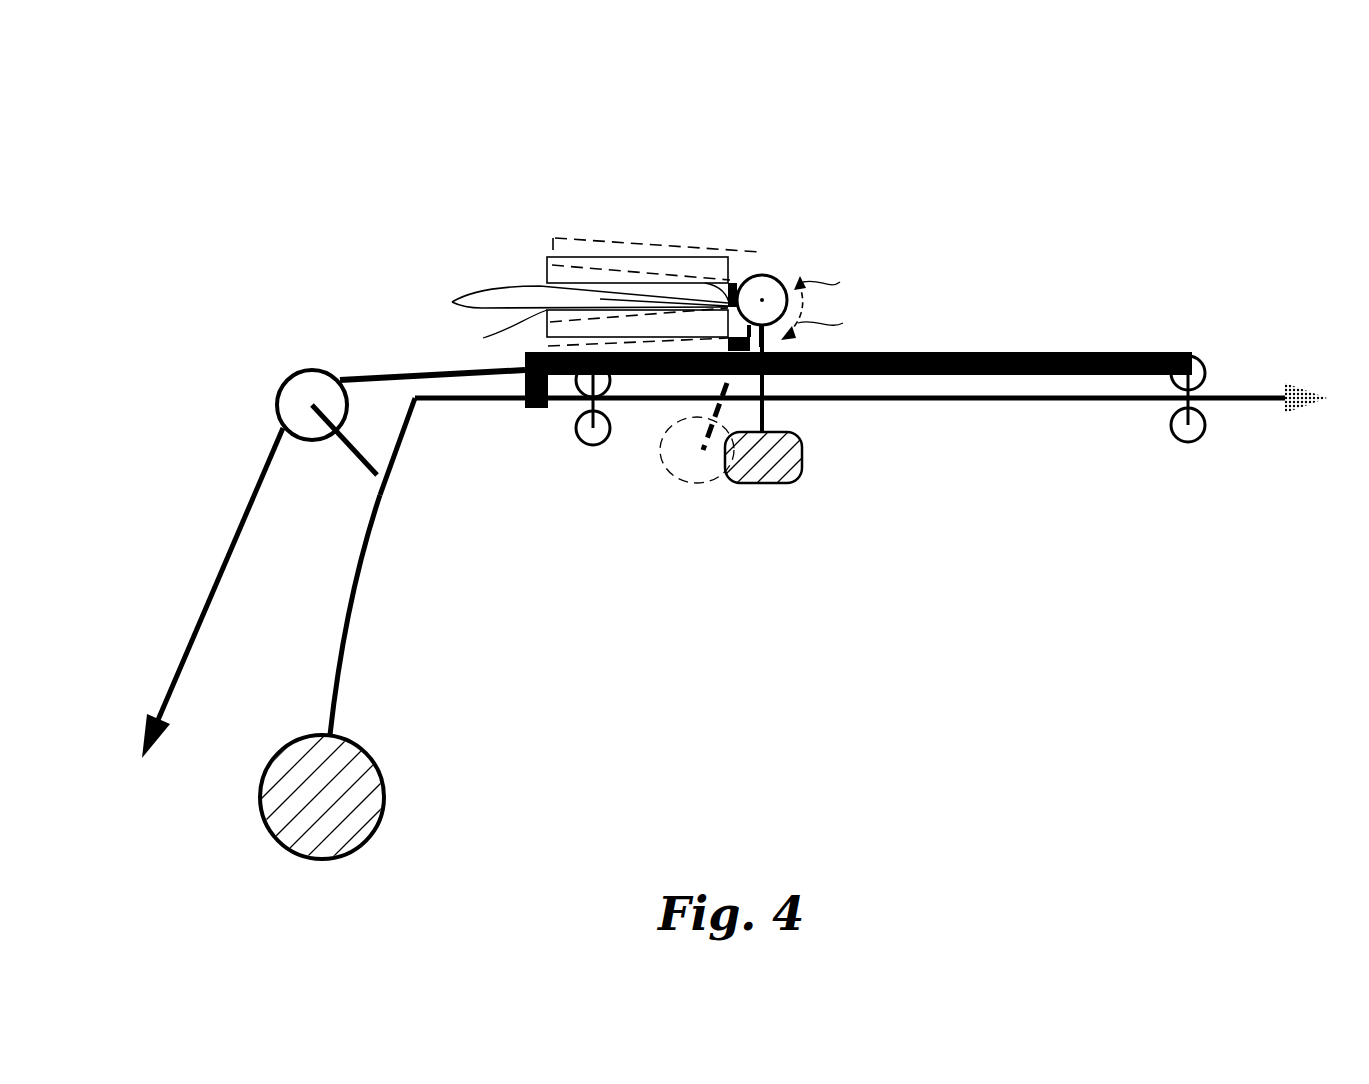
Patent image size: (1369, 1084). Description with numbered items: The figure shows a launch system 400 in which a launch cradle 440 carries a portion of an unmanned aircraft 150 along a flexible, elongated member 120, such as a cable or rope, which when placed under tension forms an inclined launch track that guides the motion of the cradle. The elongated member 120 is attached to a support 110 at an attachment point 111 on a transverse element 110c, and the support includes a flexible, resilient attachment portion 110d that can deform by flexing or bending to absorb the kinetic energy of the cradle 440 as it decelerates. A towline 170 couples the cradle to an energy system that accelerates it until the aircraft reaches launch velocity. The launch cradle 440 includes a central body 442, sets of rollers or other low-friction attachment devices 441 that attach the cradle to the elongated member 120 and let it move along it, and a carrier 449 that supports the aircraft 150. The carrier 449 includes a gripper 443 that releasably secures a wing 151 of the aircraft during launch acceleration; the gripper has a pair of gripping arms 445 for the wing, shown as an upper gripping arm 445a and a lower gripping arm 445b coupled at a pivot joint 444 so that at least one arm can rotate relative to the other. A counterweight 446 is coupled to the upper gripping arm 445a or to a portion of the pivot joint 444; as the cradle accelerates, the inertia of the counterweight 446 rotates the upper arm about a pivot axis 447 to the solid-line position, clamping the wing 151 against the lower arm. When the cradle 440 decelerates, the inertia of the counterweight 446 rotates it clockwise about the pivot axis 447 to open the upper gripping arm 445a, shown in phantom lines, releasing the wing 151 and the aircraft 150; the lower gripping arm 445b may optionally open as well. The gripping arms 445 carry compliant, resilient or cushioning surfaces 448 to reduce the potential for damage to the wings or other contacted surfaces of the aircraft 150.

The launch system 400 is at (1012, 170).
The elongated member 120 is at (985, 402).
The attachment point 111 is at (418, 405).
The attachment portion 110d is at (357, 597).
The transverse element 110c is at (390, 800).
The support 110 is at (384, 873).
The towline 170 is at (170, 670).
The attachment devices 441 is at (1202, 360).
The central body 442 is at (1022, 352).
The counterweight 446 is at (770, 483).
The launch cradle 440 is at (640, 200).
The gripping arms 445 is at (611, 236).
The upper gripping arm 445a is at (593, 260).
The lower gripping arm 445b is at (483, 338).
The gripper 443 is at (722, 239).
The carrier 449 is at (526, 262).
The unmanned aircraft 150 is at (421, 268).
The wing 151 is at (487, 293).
The pivot joint 444 is at (772, 262).
The pivot axis 447 is at (762, 300).
The cushioning surfaces 448 is at (768, 293).